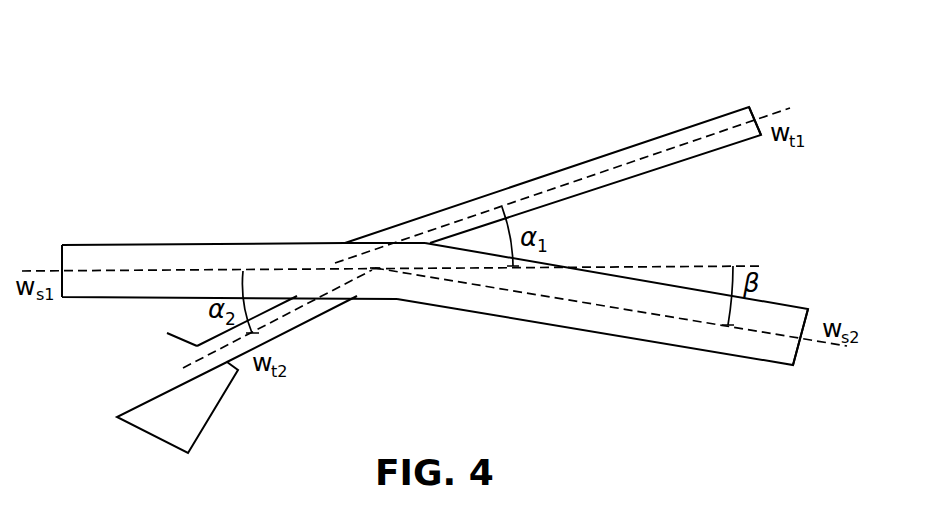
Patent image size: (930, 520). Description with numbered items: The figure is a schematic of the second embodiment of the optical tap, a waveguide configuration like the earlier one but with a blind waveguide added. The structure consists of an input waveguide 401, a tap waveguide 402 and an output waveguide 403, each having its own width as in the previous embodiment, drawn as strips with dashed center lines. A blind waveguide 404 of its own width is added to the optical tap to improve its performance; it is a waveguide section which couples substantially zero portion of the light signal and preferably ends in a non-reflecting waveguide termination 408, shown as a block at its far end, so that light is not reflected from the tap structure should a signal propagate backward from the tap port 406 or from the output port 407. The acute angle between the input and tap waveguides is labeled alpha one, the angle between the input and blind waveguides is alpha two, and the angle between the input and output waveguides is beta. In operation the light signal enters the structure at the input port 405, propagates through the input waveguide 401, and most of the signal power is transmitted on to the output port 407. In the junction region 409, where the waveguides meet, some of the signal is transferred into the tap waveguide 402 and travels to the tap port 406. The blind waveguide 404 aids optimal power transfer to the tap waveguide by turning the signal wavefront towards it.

The input waveguide 401 is at (240, 245).
The tap waveguide 402 is at (548, 173).
The output waveguide 403 is at (595, 335).
The blind waveguide 404 is at (300, 328).
The input port 405 is at (62, 258).
The tap port 406 is at (758, 120).
The output port 407 is at (806, 348).
The non-reflecting waveguide termination 408 is at (150, 435).
The junction region 409 is at (375, 270).